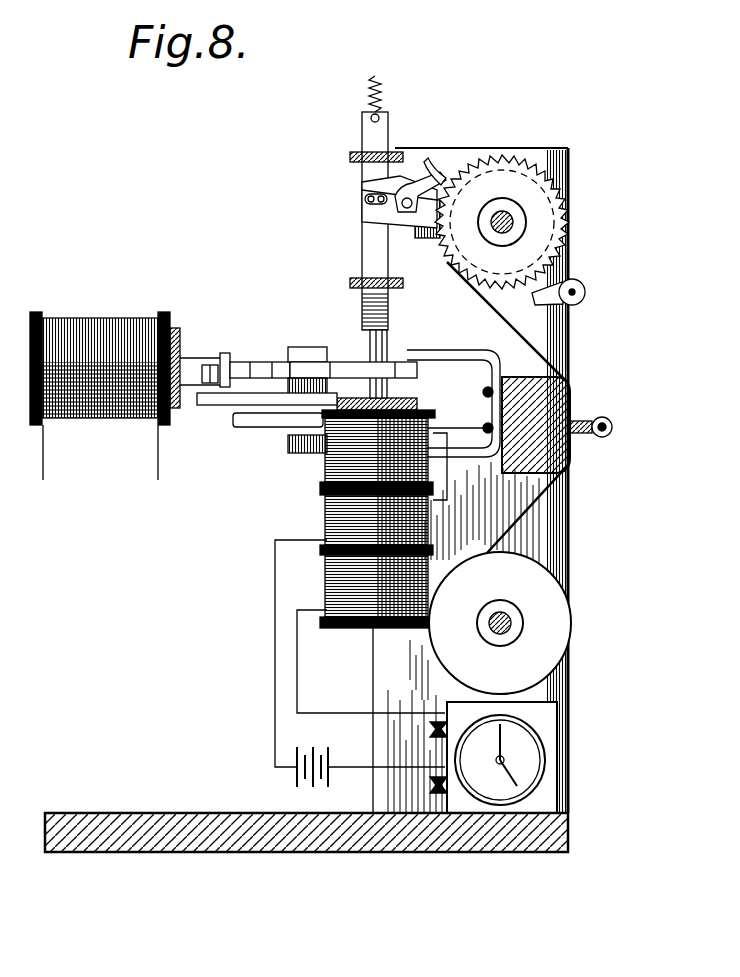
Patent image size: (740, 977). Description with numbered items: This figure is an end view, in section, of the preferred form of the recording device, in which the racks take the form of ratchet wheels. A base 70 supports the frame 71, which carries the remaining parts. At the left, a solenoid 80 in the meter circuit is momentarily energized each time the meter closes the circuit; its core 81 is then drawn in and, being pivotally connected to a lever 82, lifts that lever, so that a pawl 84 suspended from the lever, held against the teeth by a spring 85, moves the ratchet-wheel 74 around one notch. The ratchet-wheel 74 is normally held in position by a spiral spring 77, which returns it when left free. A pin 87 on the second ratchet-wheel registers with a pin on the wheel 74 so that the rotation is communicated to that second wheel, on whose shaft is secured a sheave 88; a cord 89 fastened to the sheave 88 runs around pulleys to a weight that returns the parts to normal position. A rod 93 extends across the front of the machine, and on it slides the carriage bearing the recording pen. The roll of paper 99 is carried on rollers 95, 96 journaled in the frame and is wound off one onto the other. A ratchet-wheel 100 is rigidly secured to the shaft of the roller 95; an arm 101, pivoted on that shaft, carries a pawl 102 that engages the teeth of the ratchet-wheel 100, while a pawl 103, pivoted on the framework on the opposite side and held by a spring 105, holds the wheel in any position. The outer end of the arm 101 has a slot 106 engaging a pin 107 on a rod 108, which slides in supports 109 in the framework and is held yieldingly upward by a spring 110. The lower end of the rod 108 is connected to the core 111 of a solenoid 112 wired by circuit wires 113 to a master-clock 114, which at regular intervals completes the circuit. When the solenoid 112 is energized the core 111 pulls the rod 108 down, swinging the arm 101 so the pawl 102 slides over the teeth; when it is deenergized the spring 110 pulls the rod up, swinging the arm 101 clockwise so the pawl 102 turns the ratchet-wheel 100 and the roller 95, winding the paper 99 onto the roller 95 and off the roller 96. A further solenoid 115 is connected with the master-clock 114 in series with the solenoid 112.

The base 70 is at (235, 814).
The frame 71 is at (403, 148).
The ratchet-wheel 74 is at (420, 345).
The spiral spring 77 is at (302, 362).
The solenoid 80 is at (112, 318).
The core 81 is at (192, 358).
The lever 82 is at (238, 341).
The pawl 84 is at (306, 360).
The spring 85 is at (268, 362).
The pin 87 is at (240, 396).
The sheave 88 is at (258, 428).
The cord 89 is at (480, 426).
The rod 93 is at (605, 420).
The roller 95 is at (558, 224).
The roller 96 is at (560, 628).
The roll of paper 99 is at (548, 514).
The ratchet-wheel 100 is at (520, 150).
The arm 101 is at (430, 235).
The pawl 102 is at (418, 190).
The pawl 103 is at (580, 286).
The spring 105 is at (430, 165).
The slot 106 is at (362, 198).
The pin 107 is at (365, 190).
The rod 108 is at (370, 128).
The supports 109 is at (352, 153).
The spring 110 is at (384, 81).
The core 111 is at (375, 345).
The solenoid 112 is at (345, 506).
The circuit wires 113 is at (275, 608).
The master-clock 114 is at (560, 742).
The solenoid 115 is at (345, 590).